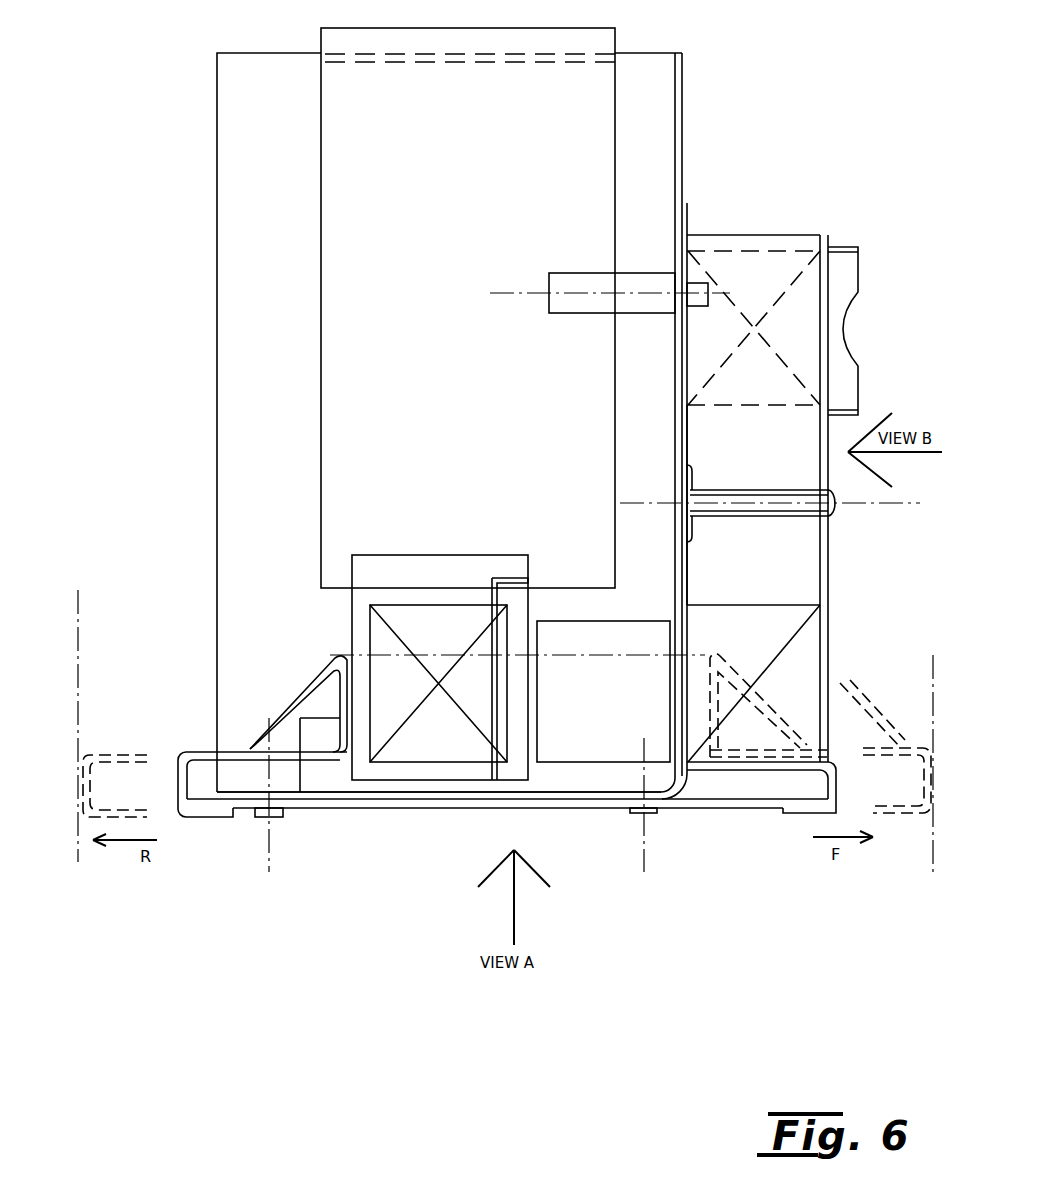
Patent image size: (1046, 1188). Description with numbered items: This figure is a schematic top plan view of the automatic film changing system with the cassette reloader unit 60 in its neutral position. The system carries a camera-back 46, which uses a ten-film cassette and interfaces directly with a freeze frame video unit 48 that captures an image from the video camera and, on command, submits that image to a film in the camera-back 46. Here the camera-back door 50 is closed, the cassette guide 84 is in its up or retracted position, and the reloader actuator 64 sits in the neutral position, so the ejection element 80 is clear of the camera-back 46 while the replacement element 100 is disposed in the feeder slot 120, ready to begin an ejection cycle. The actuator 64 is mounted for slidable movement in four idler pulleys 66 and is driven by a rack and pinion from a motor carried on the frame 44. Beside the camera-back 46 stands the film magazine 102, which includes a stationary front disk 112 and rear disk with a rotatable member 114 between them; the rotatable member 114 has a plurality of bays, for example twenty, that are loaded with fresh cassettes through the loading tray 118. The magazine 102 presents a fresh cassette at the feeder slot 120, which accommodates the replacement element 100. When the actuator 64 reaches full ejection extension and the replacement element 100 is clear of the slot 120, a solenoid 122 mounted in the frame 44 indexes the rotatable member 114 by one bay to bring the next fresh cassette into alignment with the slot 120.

The frame 44 is at (548, 790).
The camera-back 46 is at (358, 603).
The freeze frame video unit 48 is at (468, 308).
The camera-back door 50 is at (513, 593).
The cassette reloader unit 60 is at (640, 812).
The reloader actuator 64 is at (703, 800).
The idler pulleys 66 is at (262, 812).
The ejection element 80 is at (197, 752).
The cassette guide 84 is at (603, 691).
The replacement element 100 is at (763, 698).
The film magazine 102 is at (840, 230).
The front disk 112 is at (808, 567).
The rotatable member 114 is at (768, 235).
The loading tray 118 is at (848, 280).
The feeder slot 120 is at (810, 640).
The solenoid 122 is at (573, 305).